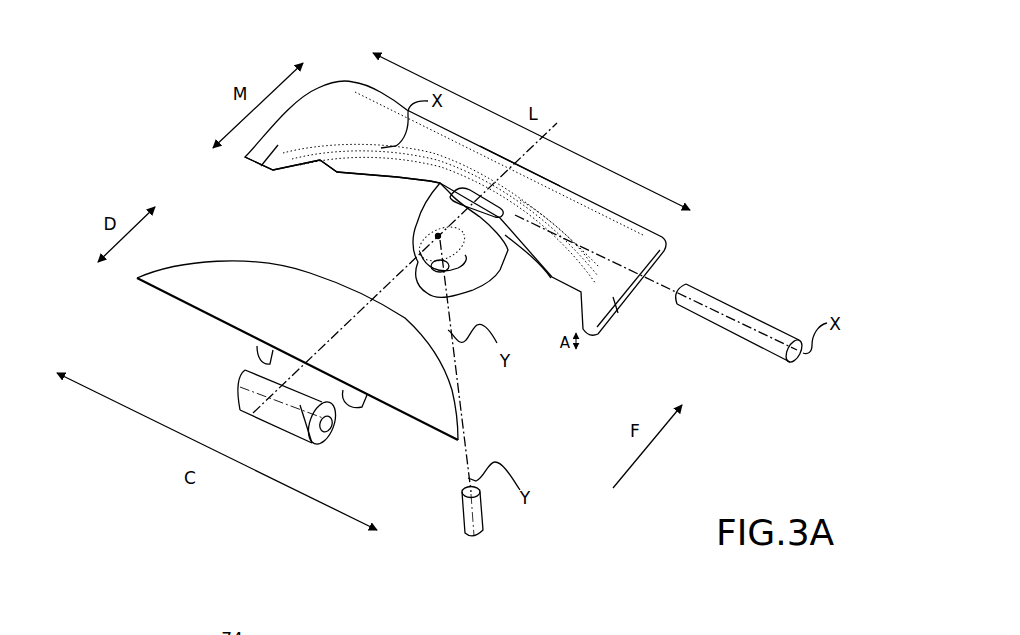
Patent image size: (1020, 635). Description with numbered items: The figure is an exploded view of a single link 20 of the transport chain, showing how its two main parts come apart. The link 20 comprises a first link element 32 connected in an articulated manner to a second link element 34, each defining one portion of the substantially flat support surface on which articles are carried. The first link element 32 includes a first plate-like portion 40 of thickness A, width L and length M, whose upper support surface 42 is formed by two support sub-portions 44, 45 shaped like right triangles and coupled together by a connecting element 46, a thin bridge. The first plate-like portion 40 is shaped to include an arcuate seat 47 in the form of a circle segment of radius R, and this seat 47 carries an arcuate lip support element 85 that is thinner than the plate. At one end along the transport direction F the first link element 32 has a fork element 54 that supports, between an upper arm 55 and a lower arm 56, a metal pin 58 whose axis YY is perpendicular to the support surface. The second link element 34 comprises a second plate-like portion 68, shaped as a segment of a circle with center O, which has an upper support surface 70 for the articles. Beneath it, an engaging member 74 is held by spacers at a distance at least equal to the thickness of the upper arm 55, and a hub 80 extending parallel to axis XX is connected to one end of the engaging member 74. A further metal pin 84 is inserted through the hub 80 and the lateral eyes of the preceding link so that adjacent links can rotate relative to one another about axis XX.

The link 20 is at (688, 123).
The first link element 32 is at (715, 227).
The second link element 34 is at (143, 313).
The first plate-like portion 40 is at (333, 70).
The upper support surface 42 is at (287, 132).
The support sub-portion 44 is at (262, 168).
The support sub-portion 45 is at (638, 303).
The connecting element 46 is at (523, 172).
The seat 47 is at (332, 197).
The fork element 54 is at (387, 222).
The upper arm 55 is at (415, 240).
The lower arm 56 is at (460, 285).
The metal pin 58 is at (463, 527).
The second plate-like portion 68 is at (213, 242).
The upper support surface 70 is at (243, 323).
The engaging member 74 is at (353, 445).
The hub 80 is at (250, 390).
The metal pin 84 is at (708, 296).
The arcuate lip support element 85 is at (550, 237).